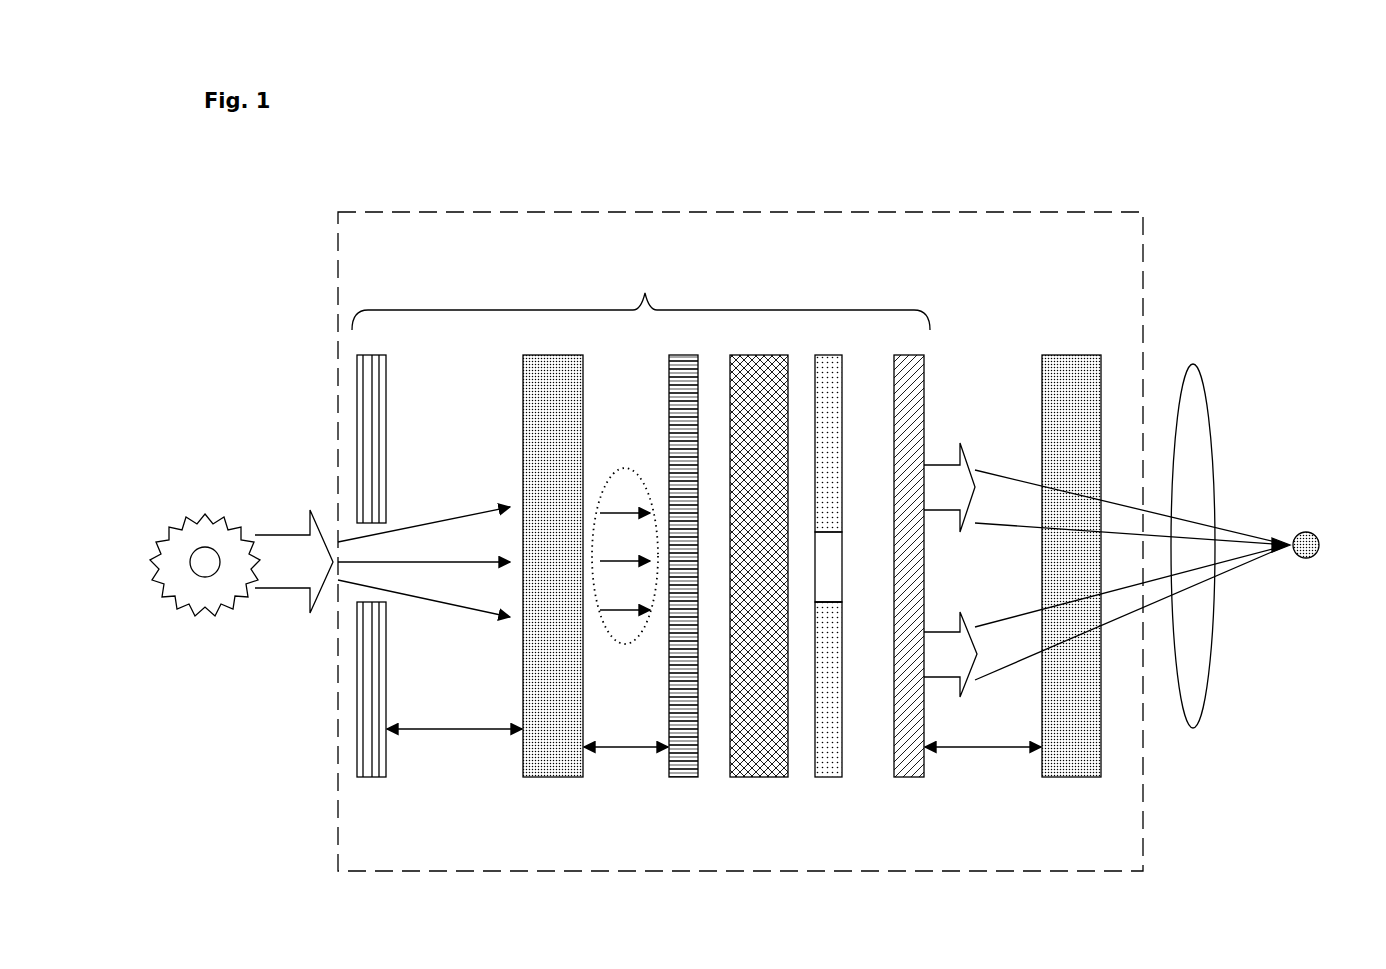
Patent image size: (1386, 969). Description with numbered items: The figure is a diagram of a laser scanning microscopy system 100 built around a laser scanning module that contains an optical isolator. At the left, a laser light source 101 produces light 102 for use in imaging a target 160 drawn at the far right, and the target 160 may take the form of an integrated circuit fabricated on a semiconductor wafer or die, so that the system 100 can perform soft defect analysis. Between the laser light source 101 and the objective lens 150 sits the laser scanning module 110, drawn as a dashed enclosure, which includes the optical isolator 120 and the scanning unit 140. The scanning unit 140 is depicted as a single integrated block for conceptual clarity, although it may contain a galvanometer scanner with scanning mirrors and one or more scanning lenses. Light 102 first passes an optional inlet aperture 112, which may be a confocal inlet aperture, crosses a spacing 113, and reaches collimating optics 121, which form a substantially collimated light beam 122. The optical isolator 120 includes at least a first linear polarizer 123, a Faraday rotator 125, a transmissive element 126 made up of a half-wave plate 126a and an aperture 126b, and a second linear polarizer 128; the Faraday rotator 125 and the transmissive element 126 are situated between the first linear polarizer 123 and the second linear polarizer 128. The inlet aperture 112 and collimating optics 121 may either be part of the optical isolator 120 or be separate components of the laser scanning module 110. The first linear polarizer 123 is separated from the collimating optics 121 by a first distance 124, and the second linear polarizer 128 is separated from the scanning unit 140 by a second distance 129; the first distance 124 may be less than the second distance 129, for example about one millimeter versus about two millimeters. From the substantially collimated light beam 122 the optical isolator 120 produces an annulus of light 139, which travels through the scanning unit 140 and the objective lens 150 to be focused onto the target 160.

The laser scanning microscopy system 100 is at (1200, 127).
The laser light source 101 is at (205, 571).
The light 102 is at (292, 590).
The laser scanning module 110 is at (440, 271).
The inlet aperture 112 is at (371, 779).
The spacing 113 is at (455, 733).
The optical isolator 120 is at (641, 295).
The collimating optics 121 is at (552, 779).
The substantially collimated light beam 122 is at (630, 646).
The first linear polarizer 123 is at (683, 779).
The first distance 124 is at (625, 751).
The Faraday rotator 125 is at (762, 779).
The transmissive element 126 is at (829, 779).
The half-wave plate 126a is at (845, 674).
The aperture 126b is at (845, 592).
The second linear polarizer 128 is at (910, 779).
The second distance 129 is at (972, 751).
The annulus of light 139 is at (968, 499).
The scanning unit 140 is at (1075, 779).
The objective lens 150 is at (1193, 729).
The target 160 is at (1310, 560).